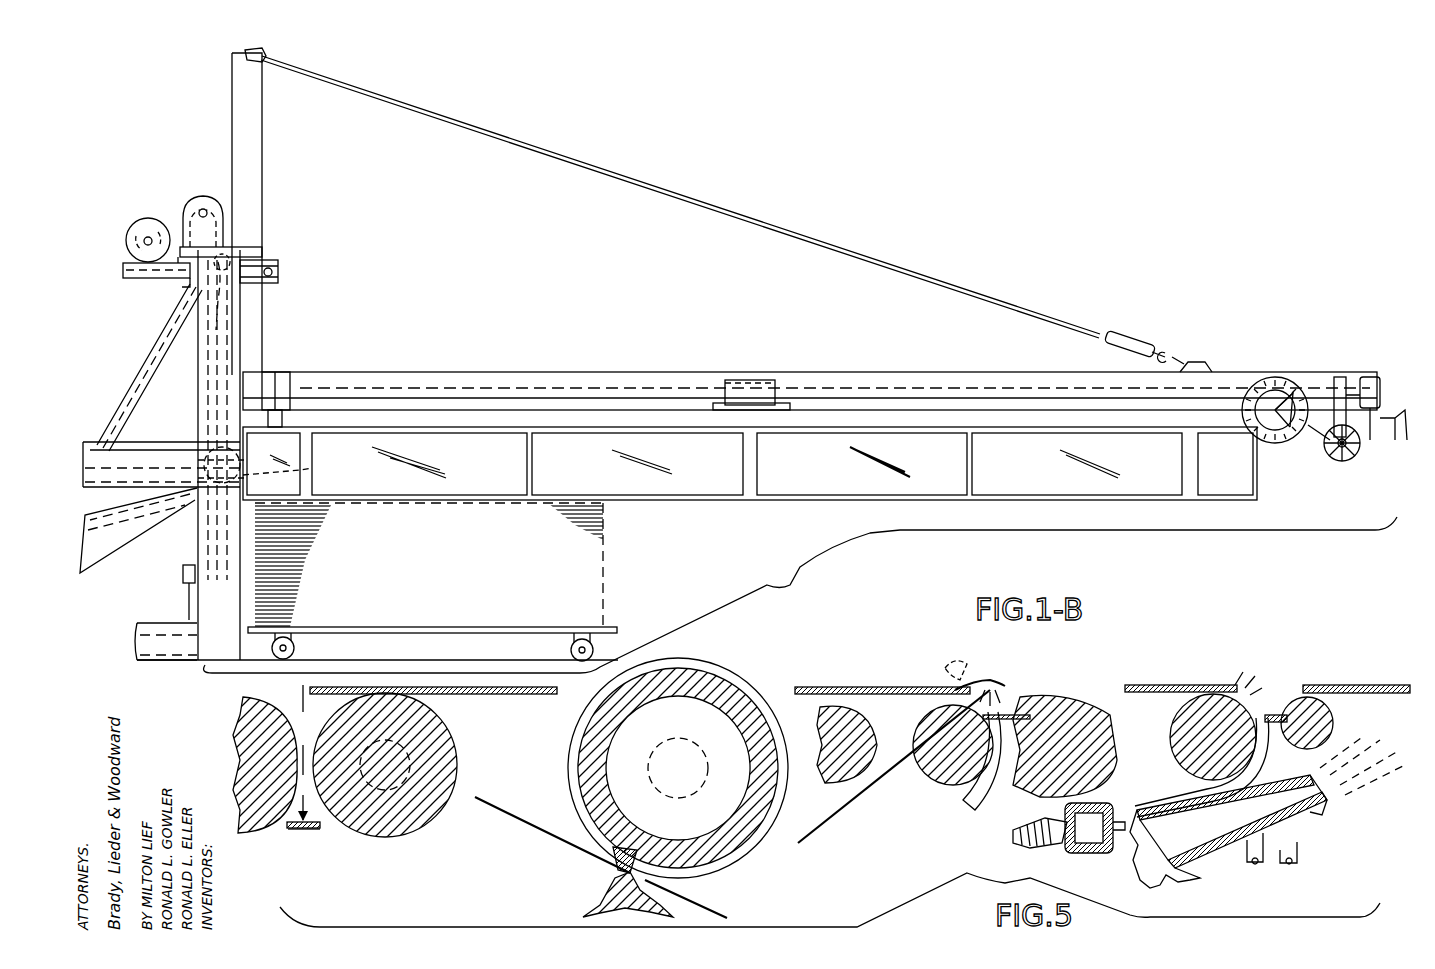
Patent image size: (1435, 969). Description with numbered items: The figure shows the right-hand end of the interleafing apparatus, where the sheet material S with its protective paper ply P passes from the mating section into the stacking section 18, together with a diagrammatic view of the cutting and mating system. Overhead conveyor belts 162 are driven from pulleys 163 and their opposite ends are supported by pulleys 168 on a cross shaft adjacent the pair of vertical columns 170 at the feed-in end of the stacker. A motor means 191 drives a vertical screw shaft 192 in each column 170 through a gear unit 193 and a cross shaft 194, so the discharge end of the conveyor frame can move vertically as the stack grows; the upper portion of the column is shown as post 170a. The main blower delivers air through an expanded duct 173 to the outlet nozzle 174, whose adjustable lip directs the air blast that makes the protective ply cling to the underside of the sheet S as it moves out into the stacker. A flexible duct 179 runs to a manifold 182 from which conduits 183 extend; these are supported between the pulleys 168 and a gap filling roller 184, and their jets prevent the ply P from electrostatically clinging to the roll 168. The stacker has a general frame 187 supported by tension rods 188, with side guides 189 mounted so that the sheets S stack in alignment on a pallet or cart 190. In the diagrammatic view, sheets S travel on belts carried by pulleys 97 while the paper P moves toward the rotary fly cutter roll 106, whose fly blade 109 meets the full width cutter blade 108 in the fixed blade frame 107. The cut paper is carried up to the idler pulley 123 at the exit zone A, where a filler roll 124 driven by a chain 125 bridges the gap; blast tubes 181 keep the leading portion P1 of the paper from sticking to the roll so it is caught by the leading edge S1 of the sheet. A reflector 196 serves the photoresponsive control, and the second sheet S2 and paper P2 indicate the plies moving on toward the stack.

In FIG. 1B, the upper post of mast 170a is at (262, 167).
In FIG. 1B, the tension rods 188 is at (748, 214).
In FIG. 1B, the vertical columns 170 is at (244, 352).
In FIG. 1B, the cross shaft 194 is at (236, 258).
In FIG. 1B, the vertical screw shaft 192 is at (228, 310).
In FIG. 1B, the motor means 191 is at (152, 218).
In FIG. 1B, the gear unit 193 is at (205, 195).
In FIG. 1B, the conveyor belts 162 is at (98, 440).
In FIG. 1B, the expanded duct 173 is at (114, 540).
In FIG. 1B, the pulleys 168 is at (215, 447).
In FIG. 5, the pulleys 168 is at (1172, 750).
In FIG. 1B, the general frame 187 is at (598, 372).
In FIG. 1B, the side guides 189 is at (808, 497).
In FIG. 1B, the blast tubes 181 is at (242, 478).
In FIG. 5, the blast tubes 181 is at (978, 805).
In FIG. 1B, the outlet nozzle 174 is at (316, 472).
In FIG. 5, the outlet nozzle 174 is at (1210, 842).
In FIG. 1B, the pallet or cart 190 is at (612, 620).
In FIG. 1B, the sheet material S is at (606, 577).
In FIG. 5, the sheet material S is at (462, 695).
In FIG. 1B, the stacking section 18 is at (800, 595).
In FIG. 5, the filler roll 124 is at (255, 835).
In FIG. 5, the reflector 196 is at (312, 830).
In FIG. 5, the pulleys 97 is at (425, 825).
In FIG. 5, the paper P is at (512, 814).
In FIG. 5, the rotary fly cutter roll 106 is at (578, 763).
In FIG. 5, the fly blade 109 is at (632, 838).
In FIG. 5, the cutter blade 108 is at (612, 862).
In FIG. 5, the fixed blade frame 107 is at (583, 913).
In FIG. 5, the idler pulley 123 is at (877, 735).
In FIG. 5, the exit zone A is at (918, 704).
In FIG. 5, the chain 125 is at (913, 760).
In FIG. 5, the leading edge of the sheet material S1 is at (960, 668).
In FIG. 5, the leading portion of the paper P1 is at (1005, 686).
In FIG. 5, the pulleys 163 is at (1090, 700).
In FIG. 5, the flexible duct 179 is at (1010, 838).
In FIG. 5, the manifold 182 is at (1088, 855).
In FIG. 5, the second sheet path P2 is at (1290, 700).
In FIG. 5, the second sheet support S2 is at (1305, 685).
In FIG. 5, the gap filling roller 184 is at (1333, 732).
In FIG. 5, the conduits 183 is at (1247, 782).